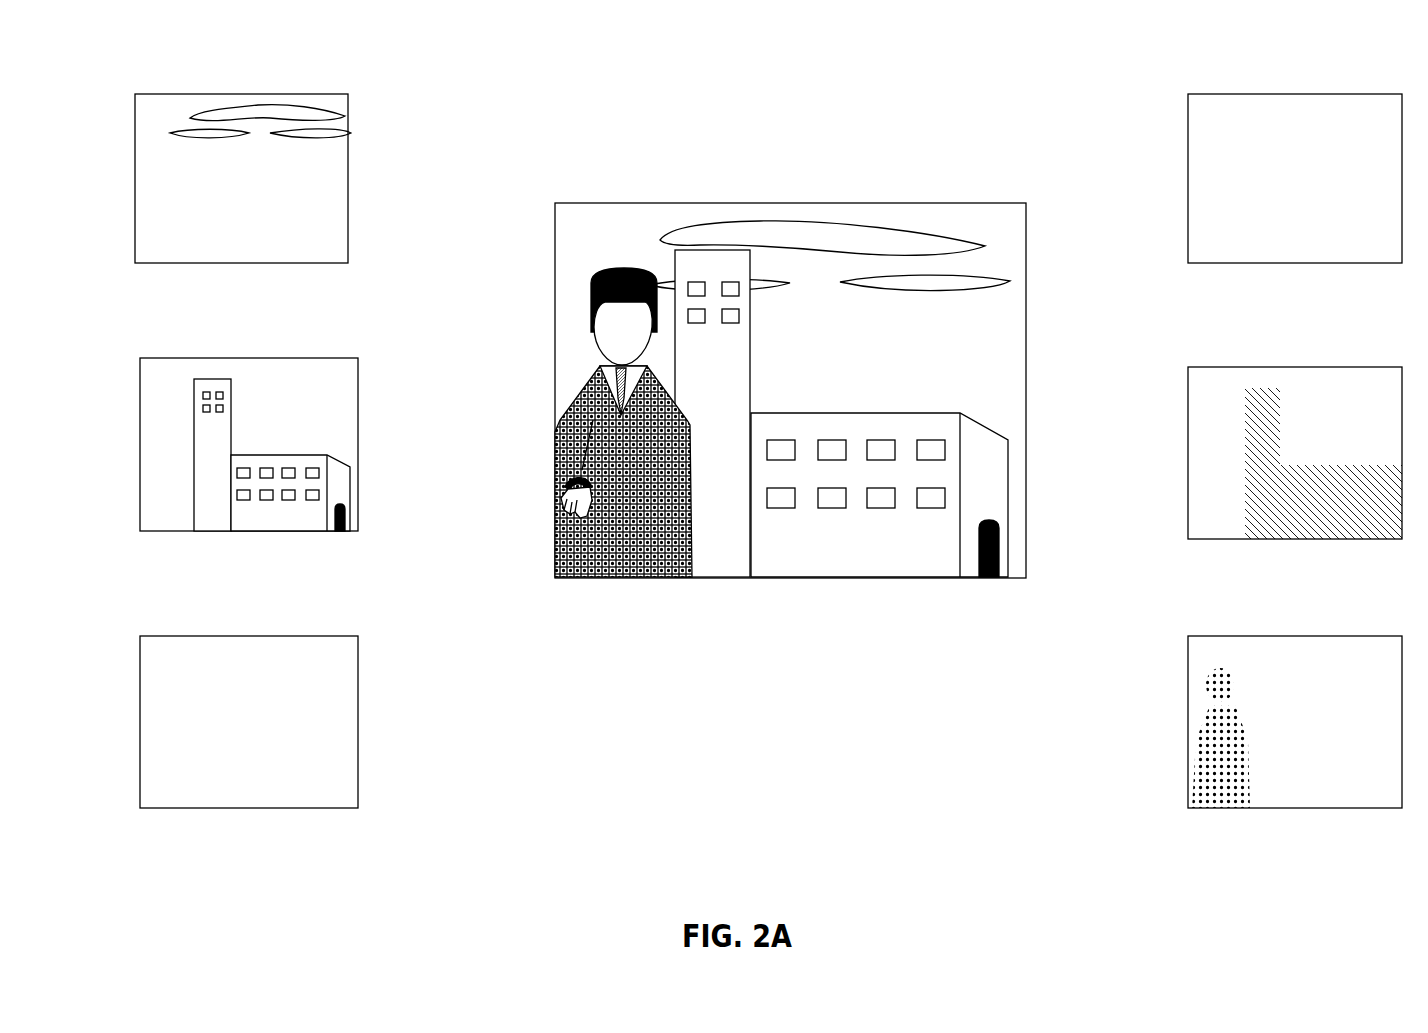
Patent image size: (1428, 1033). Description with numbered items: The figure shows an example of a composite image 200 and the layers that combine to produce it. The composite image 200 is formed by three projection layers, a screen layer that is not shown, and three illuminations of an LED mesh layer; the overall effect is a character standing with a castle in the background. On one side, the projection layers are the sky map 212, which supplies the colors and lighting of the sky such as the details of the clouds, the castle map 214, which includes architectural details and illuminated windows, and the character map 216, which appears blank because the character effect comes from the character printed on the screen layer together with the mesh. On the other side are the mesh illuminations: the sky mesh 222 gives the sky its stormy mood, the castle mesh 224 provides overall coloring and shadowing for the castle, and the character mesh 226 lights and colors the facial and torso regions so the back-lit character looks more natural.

The composite image 200 is at (737, 106).
The sky map 212 is at (260, 79).
The castle map 214 is at (260, 347).
The character map 216 is at (260, 624).
The sky mesh 222 is at (1314, 79).
The castle mesh 224 is at (1313, 351).
The character mesh 226 is at (1314, 627).